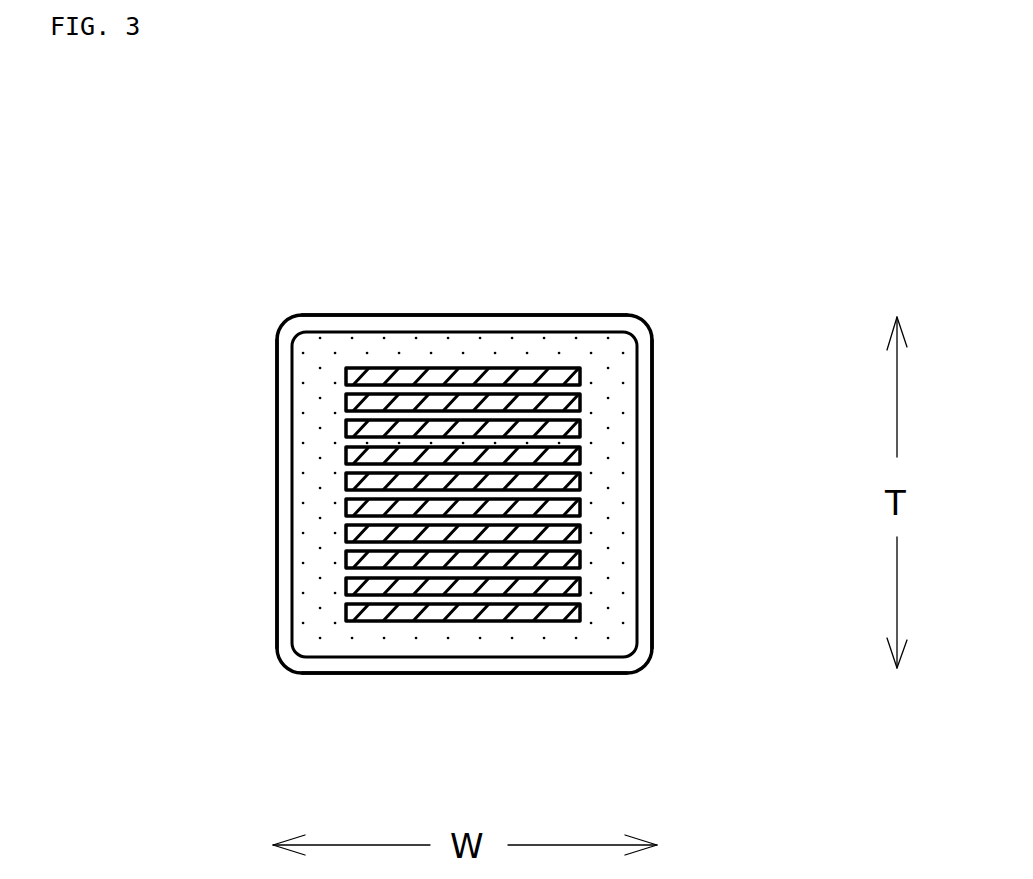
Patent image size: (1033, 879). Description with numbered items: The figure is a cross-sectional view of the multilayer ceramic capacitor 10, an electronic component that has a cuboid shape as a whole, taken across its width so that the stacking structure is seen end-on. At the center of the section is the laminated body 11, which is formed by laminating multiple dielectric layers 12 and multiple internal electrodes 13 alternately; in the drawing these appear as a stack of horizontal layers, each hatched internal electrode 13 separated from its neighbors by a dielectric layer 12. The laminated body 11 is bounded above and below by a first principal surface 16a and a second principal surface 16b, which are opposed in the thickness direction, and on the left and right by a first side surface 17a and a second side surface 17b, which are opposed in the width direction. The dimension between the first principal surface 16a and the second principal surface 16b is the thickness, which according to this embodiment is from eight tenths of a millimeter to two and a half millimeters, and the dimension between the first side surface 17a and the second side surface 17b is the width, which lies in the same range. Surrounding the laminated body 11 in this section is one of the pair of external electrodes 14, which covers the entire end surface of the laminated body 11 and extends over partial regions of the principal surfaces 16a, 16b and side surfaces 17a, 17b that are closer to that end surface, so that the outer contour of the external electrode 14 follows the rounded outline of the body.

The multilayer ceramic capacitor 10 is at (617, 280).
The laminated body 11 is at (463, 365).
The dielectric layers 12 is at (453, 366).
The internal electrodes 13 is at (530, 366).
The external electrodes 14 is at (277, 537).
The first principal surface 16a is at (368, 315).
The second principal surface 16b is at (465, 677).
The first side surface 17a is at (277, 430).
The second side surface 17b is at (652, 437).